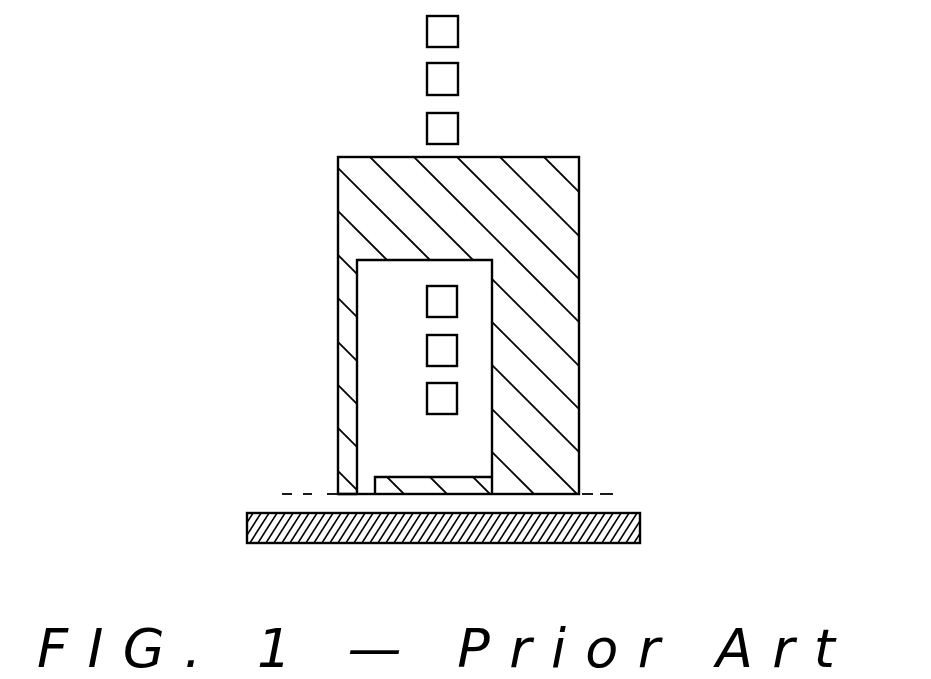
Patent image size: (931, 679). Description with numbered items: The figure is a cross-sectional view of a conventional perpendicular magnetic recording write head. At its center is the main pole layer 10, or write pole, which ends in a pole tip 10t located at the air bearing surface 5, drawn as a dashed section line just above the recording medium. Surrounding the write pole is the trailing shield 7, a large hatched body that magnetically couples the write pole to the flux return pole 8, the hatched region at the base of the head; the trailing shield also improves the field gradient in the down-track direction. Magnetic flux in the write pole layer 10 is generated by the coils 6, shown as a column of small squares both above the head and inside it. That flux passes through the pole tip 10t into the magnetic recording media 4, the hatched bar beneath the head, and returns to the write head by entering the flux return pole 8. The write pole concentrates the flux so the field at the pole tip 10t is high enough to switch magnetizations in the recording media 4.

The magnetic recording media 4 is at (262, 528).
The air bearing surface 5 is at (447, 497).
The coils 6 is at (443, 302).
The trailing shield 7 is at (560, 357).
The flux return pole 8 is at (460, 484).
The main pole layer 10 is at (342, 471).
The pole tip 10t is at (341, 494).